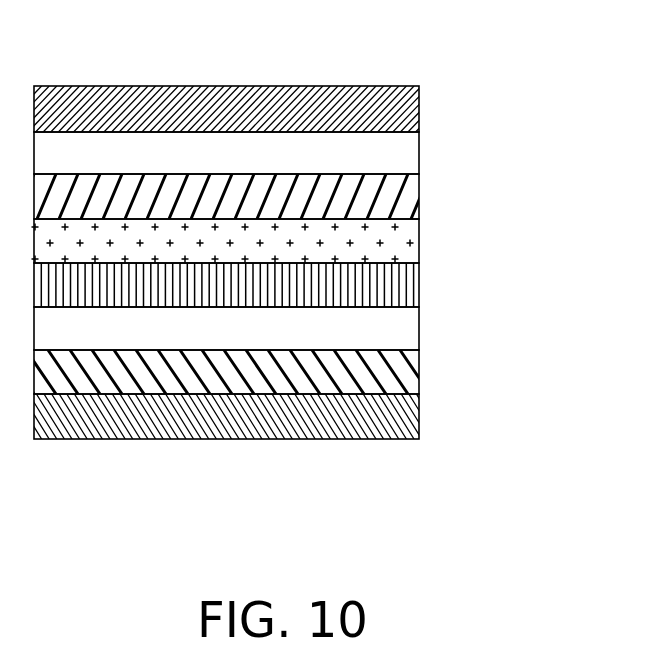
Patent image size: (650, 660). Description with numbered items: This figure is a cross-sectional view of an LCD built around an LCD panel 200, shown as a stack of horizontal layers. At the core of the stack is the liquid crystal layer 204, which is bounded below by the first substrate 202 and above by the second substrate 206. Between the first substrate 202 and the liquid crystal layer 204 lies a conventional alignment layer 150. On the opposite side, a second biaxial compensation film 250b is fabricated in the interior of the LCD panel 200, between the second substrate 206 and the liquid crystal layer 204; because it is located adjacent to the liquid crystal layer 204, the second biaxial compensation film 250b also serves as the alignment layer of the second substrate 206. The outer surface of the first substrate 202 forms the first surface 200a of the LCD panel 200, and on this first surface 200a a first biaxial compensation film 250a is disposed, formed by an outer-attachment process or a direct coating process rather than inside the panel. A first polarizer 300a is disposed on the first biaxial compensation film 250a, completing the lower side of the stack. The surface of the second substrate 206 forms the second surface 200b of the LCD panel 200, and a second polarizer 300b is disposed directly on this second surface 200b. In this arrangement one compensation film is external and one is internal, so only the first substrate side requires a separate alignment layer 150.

The second polarizer 300b is at (419, 105).
The second substrate 206 is at (419, 156).
The second biaxial compensation film 250b is at (419, 200).
The liquid crystal layer 204 is at (419, 243).
The alignment layer 150 is at (419, 288).
The first substrate 202 is at (419, 332).
The first biaxial compensation film 250a is at (419, 377).
The first polarizer 300a is at (419, 420).
The LCD panel 200 is at (546, 127).
The second surface 200b is at (287, 127).
The first surface 200a is at (280, 354).